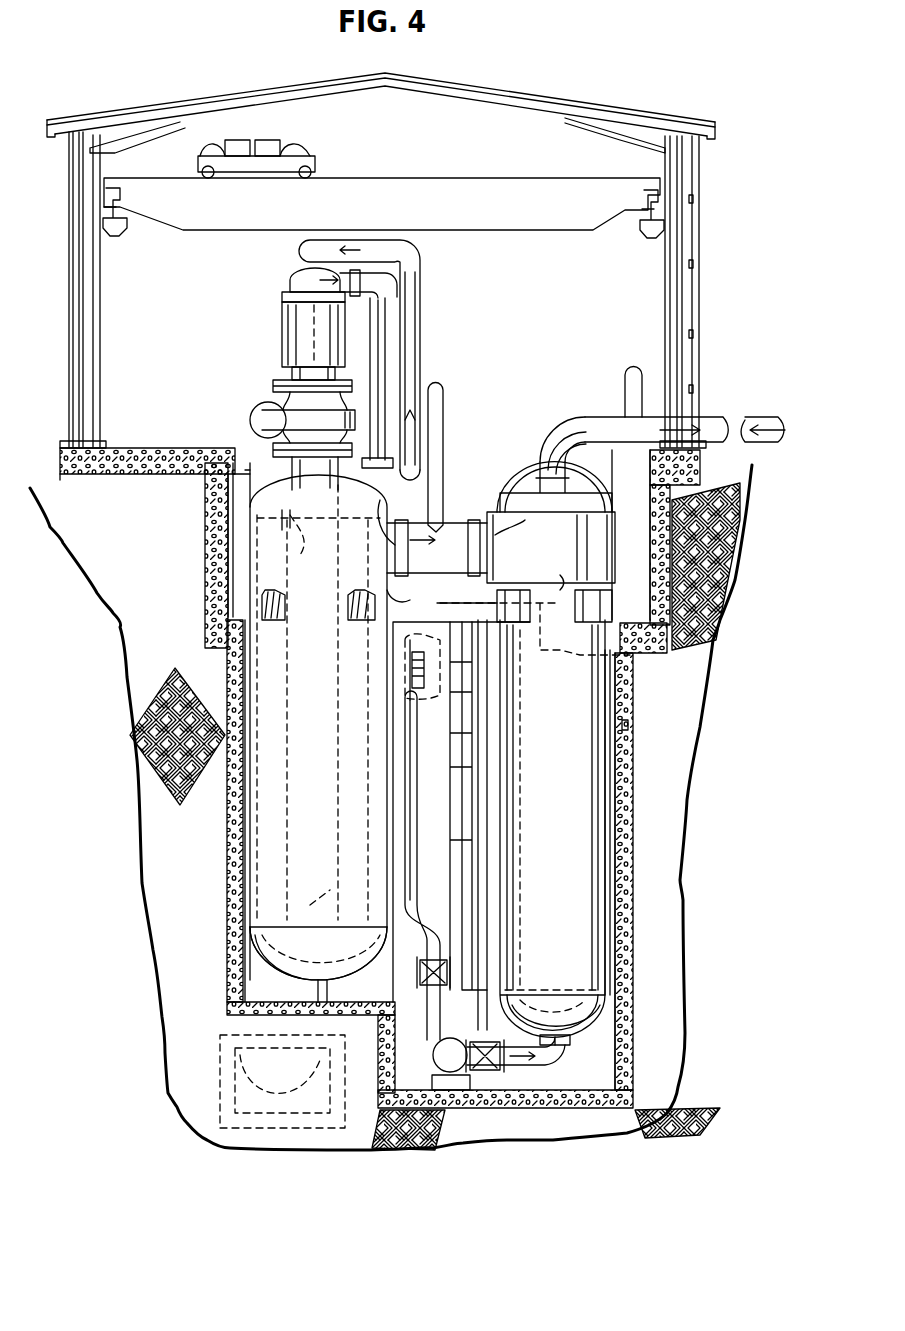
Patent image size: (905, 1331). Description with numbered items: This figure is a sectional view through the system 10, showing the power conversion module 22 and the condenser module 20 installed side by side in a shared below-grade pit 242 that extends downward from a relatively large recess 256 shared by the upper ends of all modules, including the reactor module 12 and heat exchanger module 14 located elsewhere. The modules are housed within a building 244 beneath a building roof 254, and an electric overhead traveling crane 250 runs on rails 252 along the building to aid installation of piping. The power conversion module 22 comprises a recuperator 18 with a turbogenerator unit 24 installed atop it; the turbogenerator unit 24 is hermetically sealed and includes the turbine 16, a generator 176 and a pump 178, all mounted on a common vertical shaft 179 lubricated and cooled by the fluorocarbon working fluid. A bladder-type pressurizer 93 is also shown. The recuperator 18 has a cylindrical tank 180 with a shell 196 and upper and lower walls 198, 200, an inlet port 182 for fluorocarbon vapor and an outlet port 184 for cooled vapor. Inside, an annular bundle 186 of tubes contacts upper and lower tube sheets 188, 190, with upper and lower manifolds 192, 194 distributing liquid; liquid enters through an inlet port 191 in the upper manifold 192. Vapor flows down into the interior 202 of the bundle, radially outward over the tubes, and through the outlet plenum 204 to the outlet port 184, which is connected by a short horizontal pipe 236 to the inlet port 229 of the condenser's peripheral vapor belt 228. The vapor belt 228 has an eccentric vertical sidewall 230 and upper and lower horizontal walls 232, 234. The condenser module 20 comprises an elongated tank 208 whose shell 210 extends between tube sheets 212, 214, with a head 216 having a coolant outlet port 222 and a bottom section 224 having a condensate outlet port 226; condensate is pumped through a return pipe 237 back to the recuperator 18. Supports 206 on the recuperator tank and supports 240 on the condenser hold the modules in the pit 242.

The system 10 is at (152, 1057).
The reactor module 12 is at (600, 664).
The heat exchanger module 14 is at (240, 1029).
The turbine 16 is at (255, 416).
The recuperator 18 is at (285, 976).
The condenser module 20 is at (635, 1049).
The power conversion module 22 is at (248, 538).
The turbogenerator unit 24 is at (283, 356).
The bladder-type pressurizer 93 is at (394, 513).
The generator 176 is at (288, 323).
The pump 178 is at (300, 281).
The common vertical shaft 179 is at (300, 336).
The tank 180 is at (290, 964).
The inlet port 182 is at (290, 487).
The outlet port 184 is at (458, 788).
The annular bundle of tubes 186 is at (300, 859).
The upper tube sheet 188 is at (311, 538).
The lower tube sheet 190 is at (338, 893).
The inlet port 191 is at (437, 458).
The upper manifold 192 is at (260, 497).
The lower manifold 194 is at (245, 933).
The shell 196 is at (232, 794).
The upper wall 198 is at (304, 503).
The lower wall 200 is at (340, 1009).
The interior 202 is at (250, 824).
The outlet plenum 204 is at (440, 734).
The supports 206 is at (352, 618).
The elongated tank 208 is at (633, 774).
The shell 210 is at (612, 799).
The tube sheet 212 is at (512, 479).
The tube sheet 214 is at (535, 984).
The head 216 is at (530, 443).
The outlet port 222 is at (660, 479).
The bottom section 224 is at (598, 1031).
The outlet port 226 is at (615, 1069).
The peripheral vapor belt 228 is at (690, 559).
The inlet port 229 is at (522, 524).
The vertical sidewall 230 is at (551, 547).
The upper horizontal wall 232 is at (510, 519).
The lower horizontal wall 234 is at (540, 573).
The short horizontal pipe 236 is at (437, 548).
The return pipe 237 is at (425, 299).
The supports 240 is at (680, 604).
The pit 242 is at (630, 724).
The building 244 is at (702, 278).
The electric overhead traveling crane 250 is at (382, 185).
The rails 252 is at (110, 232).
The building roof 254 is at (235, 92).
The recess 256 is at (487, 444).